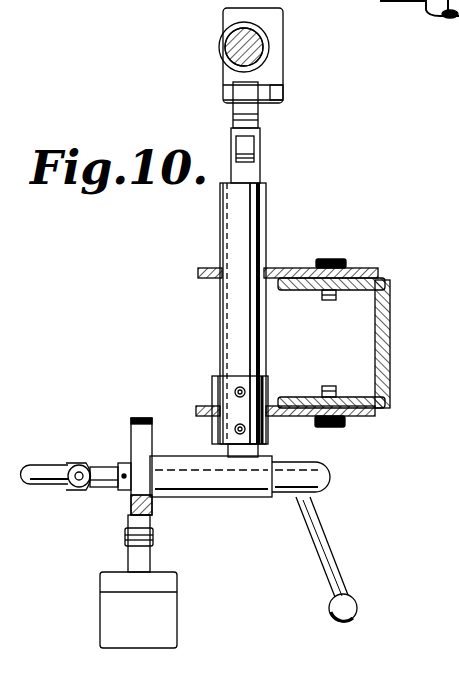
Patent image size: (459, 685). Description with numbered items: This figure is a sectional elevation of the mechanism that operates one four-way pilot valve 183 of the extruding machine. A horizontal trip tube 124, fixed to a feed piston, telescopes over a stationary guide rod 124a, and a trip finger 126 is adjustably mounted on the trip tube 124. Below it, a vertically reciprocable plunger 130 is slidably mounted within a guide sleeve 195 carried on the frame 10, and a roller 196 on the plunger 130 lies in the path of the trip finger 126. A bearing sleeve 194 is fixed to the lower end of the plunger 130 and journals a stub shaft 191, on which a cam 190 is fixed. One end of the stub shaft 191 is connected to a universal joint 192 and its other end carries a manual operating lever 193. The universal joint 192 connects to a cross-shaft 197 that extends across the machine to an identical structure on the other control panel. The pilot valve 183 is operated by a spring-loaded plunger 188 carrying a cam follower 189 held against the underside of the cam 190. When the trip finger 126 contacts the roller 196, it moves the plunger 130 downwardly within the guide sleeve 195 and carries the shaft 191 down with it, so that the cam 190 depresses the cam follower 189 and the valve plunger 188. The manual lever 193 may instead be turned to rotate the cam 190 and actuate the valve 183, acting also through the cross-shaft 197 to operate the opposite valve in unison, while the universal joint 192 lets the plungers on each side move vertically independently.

The frame 10 is at (393, 349).
The trip tube 124 is at (265, 26).
The stationary guide rod 124a is at (232, 45).
The trip finger 126 is at (270, 69).
The valve-operating plunger 130 is at (247, 171).
The four-way pilot valve 183 is at (157, 613).
The plunger 188 is at (142, 561).
The cam follower 189 is at (128, 538).
The cam 190 is at (140, 424).
The stub shaft 191 is at (107, 490).
The universal joint 192 is at (76, 481).
The manual operating lever 193 is at (314, 549).
The bearing sleeve 194 is at (236, 482).
The guide sleeve 195 is at (236, 306).
The roller 196 is at (246, 142).
The cross-shaft 197 is at (40, 470).